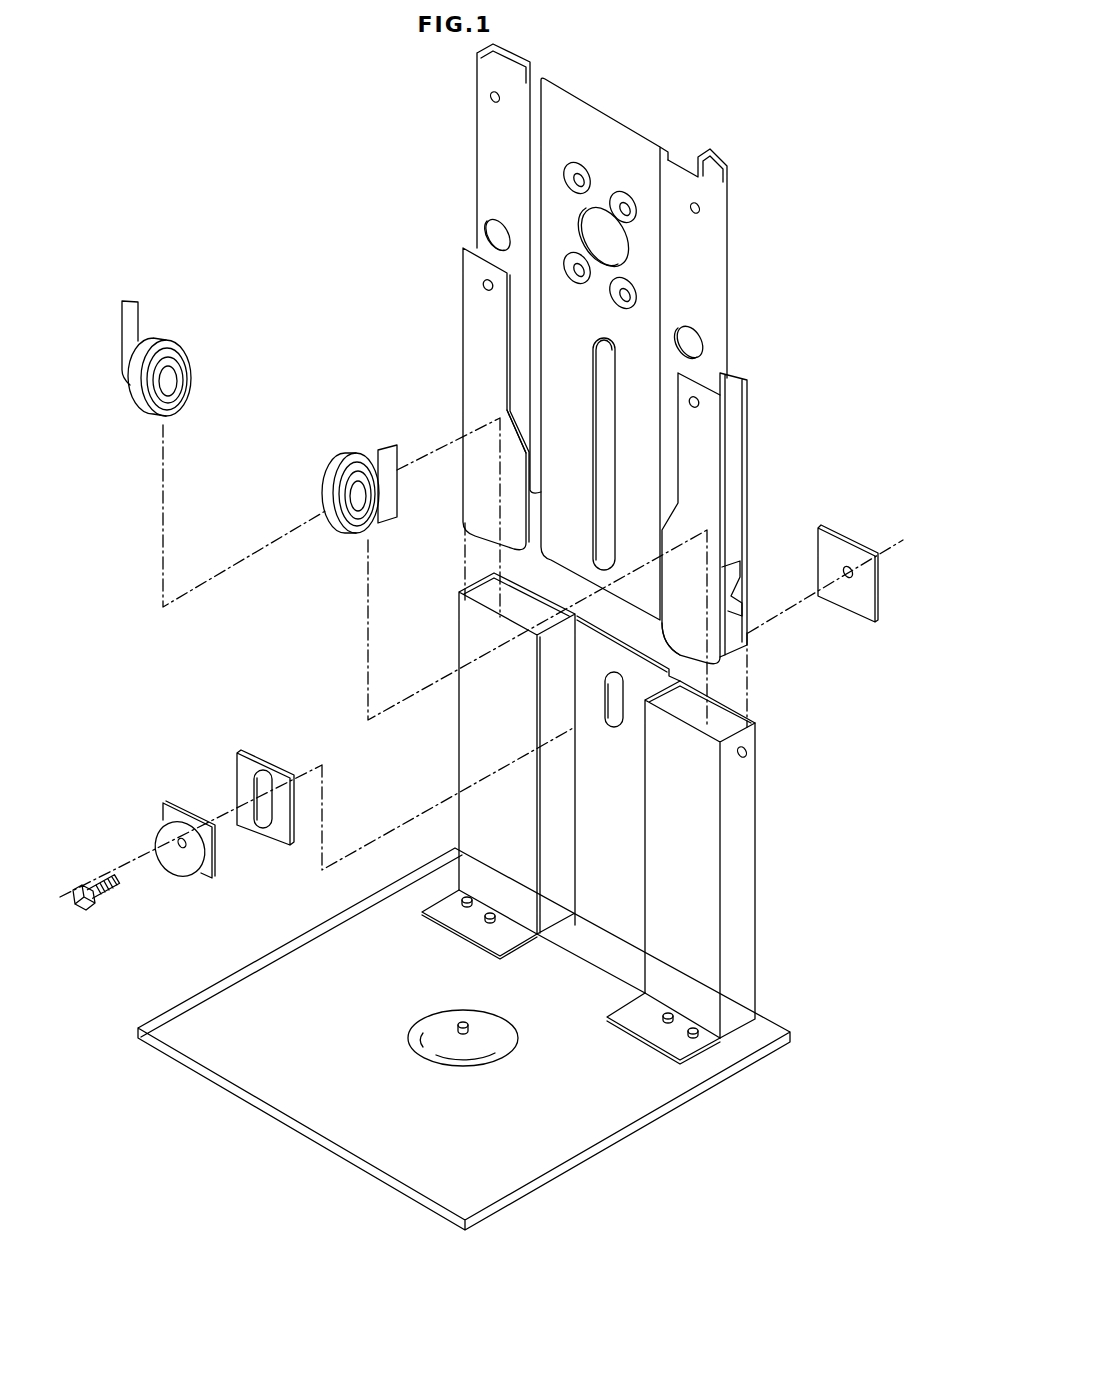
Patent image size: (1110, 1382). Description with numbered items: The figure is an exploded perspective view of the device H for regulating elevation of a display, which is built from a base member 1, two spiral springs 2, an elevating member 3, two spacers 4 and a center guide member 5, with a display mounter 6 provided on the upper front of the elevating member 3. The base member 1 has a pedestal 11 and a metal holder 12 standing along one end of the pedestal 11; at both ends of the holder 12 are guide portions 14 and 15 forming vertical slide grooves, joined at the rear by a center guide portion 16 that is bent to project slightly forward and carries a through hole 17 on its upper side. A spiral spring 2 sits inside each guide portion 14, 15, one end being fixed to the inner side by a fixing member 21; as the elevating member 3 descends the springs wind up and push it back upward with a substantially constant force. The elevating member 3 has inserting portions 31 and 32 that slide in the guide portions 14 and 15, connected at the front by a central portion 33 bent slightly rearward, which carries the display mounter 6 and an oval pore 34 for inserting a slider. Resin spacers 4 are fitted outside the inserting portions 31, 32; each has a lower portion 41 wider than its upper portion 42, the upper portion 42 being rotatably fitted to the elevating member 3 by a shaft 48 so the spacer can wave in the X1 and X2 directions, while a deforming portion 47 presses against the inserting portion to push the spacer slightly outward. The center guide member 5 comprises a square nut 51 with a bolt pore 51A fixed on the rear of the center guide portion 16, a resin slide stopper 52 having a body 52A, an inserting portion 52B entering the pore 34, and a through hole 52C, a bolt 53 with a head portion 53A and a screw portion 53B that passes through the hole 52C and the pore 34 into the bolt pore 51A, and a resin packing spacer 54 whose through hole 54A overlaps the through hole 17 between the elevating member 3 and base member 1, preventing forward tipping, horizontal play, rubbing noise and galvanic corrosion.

The base member 1 is at (479, 901).
The spiral spring 2 is at (114, 336).
The elevating member 3 is at (596, 321).
The spacer 4 is at (596, 469).
The center guide member 5 is at (177, 819).
The display mounter 6 is at (566, 217).
The pedestal 11 is at (585, 1105).
The holder 12 is at (713, 872).
The guide portion 14 is at (468, 778).
The guide portion 15 is at (733, 885).
The center guide portion 16 is at (678, 804).
The through hole 17 is at (617, 728).
The fixing member 21 is at (747, 750).
The inserting portion 31 is at (490, 208).
The inserting portion 32 is at (697, 270).
The central portion 33 is at (597, 349).
The pore for inserting a slider 34 is at (620, 463).
The lower portion 41 is at (472, 510).
The upper portion 42 is at (478, 313).
The deforming portion 47 is at (735, 582).
The shaft 48 is at (482, 286).
The square nut 51 is at (826, 526).
The bolt pore 51A is at (849, 568).
The slide stopper 52 is at (173, 822).
The body 52A is at (168, 838).
The inserting portion 52B is at (197, 820).
The through hole for a bolt 52C is at (195, 853).
The bolt 53 is at (106, 890).
The head portion 53A is at (80, 907).
The screw portion 53B is at (110, 893).
The packing spacer 54 is at (248, 748).
The through hole for a bolt 54A is at (250, 756).
The device for regulating elevation of a display H is at (289, 230).
The X1 direction X1 is at (453, 483).
The X2 direction X2 is at (763, 628).